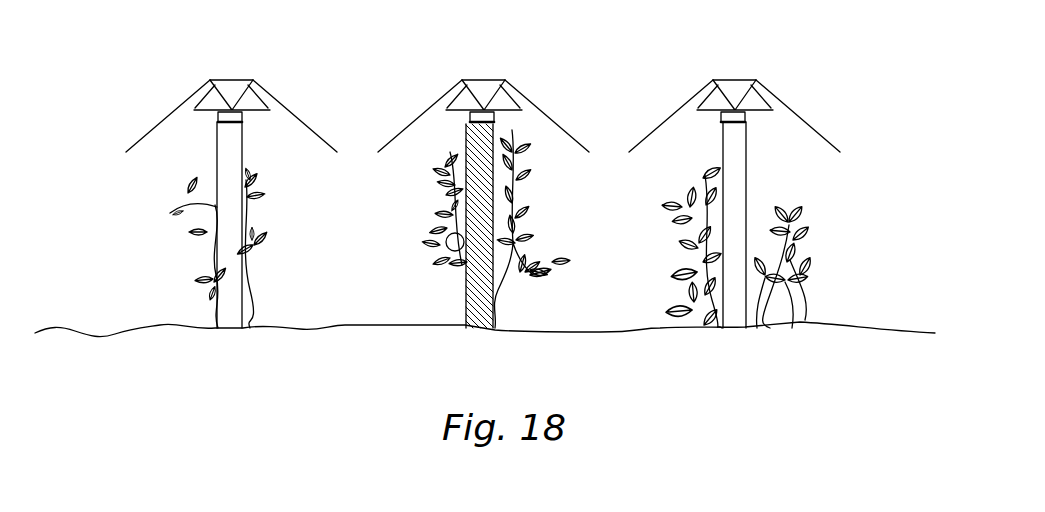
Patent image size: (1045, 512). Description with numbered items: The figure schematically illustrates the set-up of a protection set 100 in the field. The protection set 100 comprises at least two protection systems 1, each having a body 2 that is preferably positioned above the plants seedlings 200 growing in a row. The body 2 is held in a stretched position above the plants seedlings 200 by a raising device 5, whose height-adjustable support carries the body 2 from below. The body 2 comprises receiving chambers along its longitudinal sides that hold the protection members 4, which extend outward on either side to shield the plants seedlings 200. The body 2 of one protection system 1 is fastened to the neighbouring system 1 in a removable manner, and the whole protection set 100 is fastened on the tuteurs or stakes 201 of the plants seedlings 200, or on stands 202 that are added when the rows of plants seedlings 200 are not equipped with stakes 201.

The protection system 1 is at (229, 76).
The body 2 is at (264, 83).
The protection members 4 is at (165, 121).
The raising device 5 is at (217, 117).
The protection set 100 is at (133, 407).
The plants seedlings 200 is at (206, 297).
The stakes 201 is at (233, 160).
The stands 202 is at (440, 195).